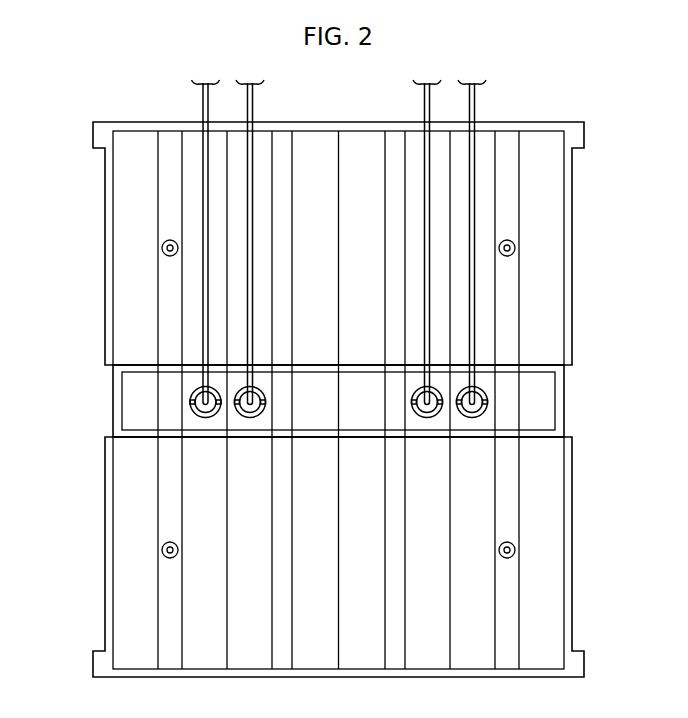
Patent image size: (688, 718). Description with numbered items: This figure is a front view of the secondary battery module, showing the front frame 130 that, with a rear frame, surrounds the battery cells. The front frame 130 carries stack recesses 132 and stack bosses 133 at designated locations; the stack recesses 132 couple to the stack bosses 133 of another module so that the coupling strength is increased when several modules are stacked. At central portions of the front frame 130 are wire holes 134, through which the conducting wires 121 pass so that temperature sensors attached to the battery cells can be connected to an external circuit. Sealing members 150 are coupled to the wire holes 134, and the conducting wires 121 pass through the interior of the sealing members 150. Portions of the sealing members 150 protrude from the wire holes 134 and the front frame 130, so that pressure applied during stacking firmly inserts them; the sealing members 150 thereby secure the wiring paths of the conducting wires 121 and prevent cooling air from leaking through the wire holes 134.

The front frame 130 is at (594, 109).
The conducting wires 121 is at (204, 103).
The stack recesses 132 is at (162, 254).
The stack bosses 133 is at (162, 551).
The wire holes 134 is at (190, 410).
The sealing members 150 is at (485, 397).